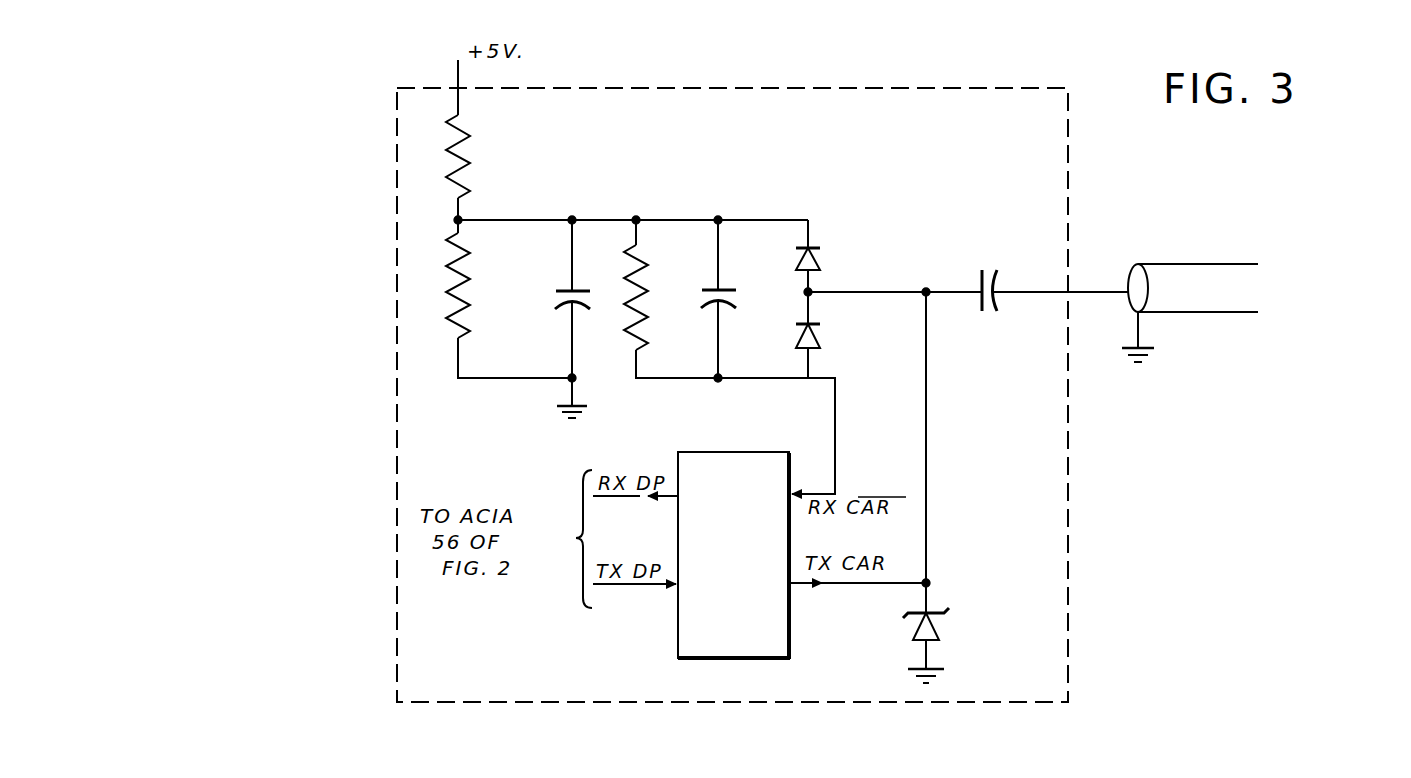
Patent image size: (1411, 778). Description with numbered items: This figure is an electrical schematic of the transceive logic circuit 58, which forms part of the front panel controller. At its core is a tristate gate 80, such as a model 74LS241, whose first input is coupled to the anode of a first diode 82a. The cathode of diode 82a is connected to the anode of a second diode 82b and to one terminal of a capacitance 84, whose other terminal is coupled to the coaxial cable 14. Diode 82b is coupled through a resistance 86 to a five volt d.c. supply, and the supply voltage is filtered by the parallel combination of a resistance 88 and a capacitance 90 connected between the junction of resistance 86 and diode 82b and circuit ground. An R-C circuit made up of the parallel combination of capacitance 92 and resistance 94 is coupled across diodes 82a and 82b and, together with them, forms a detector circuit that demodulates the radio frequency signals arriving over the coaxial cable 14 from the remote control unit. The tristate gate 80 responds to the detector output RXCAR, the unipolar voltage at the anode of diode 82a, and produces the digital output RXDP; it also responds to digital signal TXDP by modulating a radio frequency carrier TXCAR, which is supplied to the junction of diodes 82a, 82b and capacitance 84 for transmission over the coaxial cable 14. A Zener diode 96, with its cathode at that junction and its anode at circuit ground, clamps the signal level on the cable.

The transceive logic circuit 58 is at (771, 124).
The resistance 86 is at (466, 156).
The resistance 88 is at (468, 294).
The capacitance 90 is at (571, 303).
The resistance 94 is at (645, 293).
The capacitance 92 is at (724, 305).
The second diode 82b is at (820, 261).
The first diode 82a is at (819, 333).
The capacitance 84 is at (997, 300).
The coaxial cable 14 is at (1178, 313).
The tristate gate 80 is at (746, 607).
The Zener diode 96 is at (938, 622).